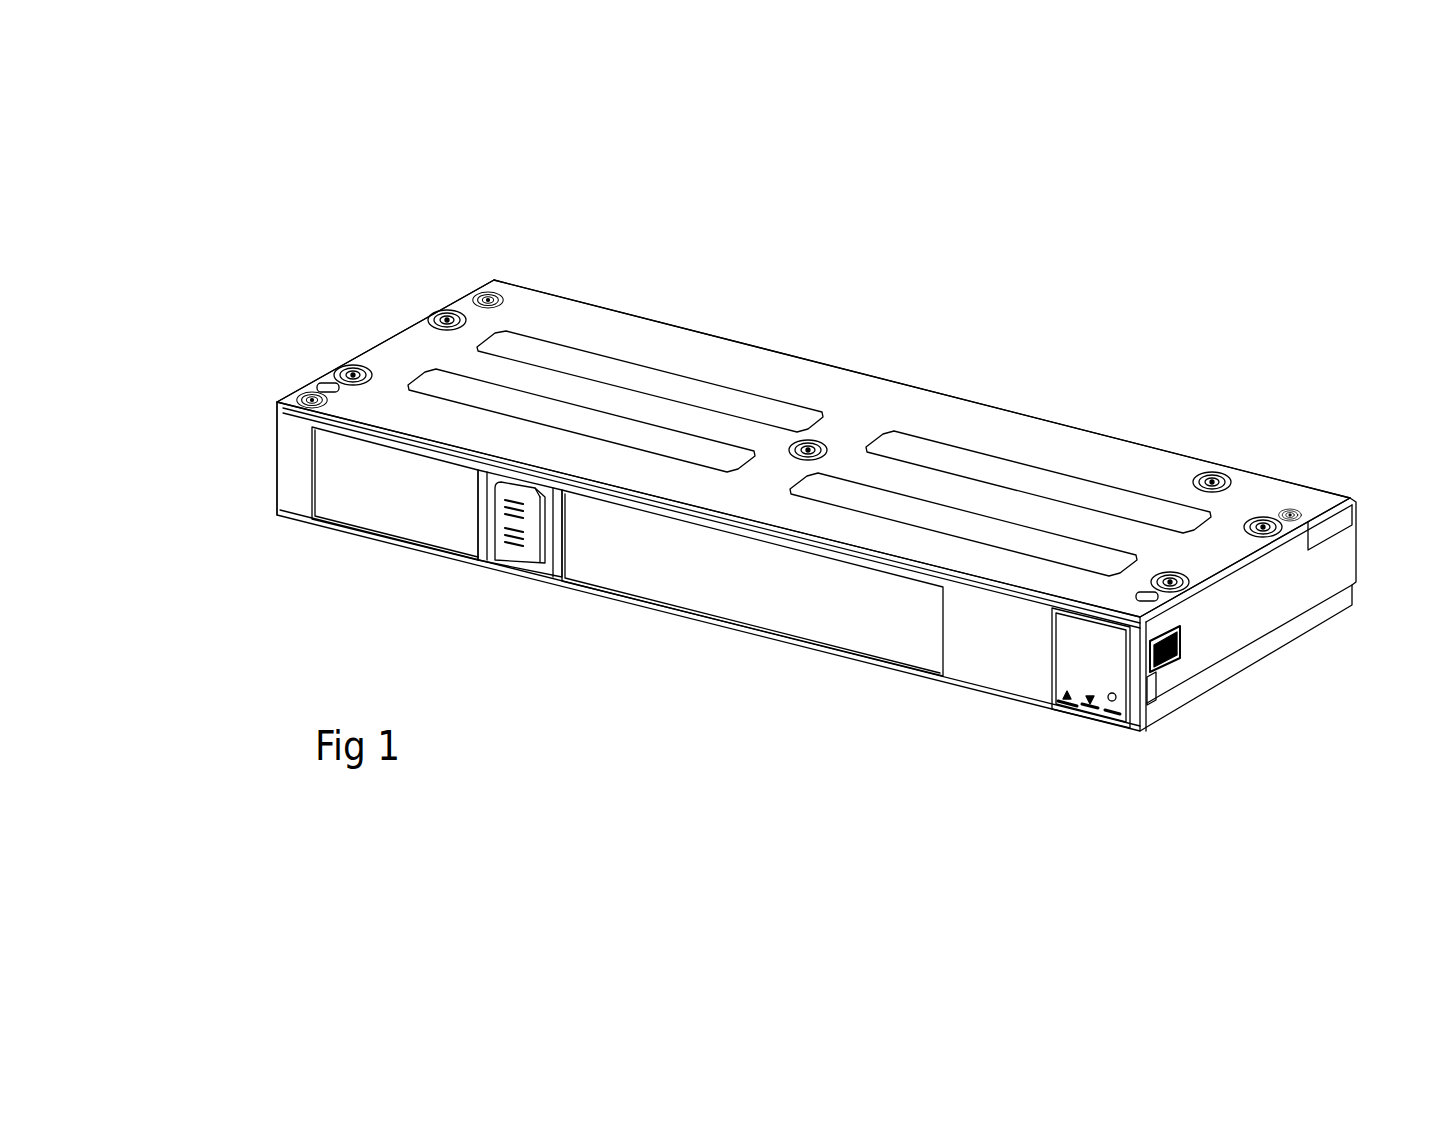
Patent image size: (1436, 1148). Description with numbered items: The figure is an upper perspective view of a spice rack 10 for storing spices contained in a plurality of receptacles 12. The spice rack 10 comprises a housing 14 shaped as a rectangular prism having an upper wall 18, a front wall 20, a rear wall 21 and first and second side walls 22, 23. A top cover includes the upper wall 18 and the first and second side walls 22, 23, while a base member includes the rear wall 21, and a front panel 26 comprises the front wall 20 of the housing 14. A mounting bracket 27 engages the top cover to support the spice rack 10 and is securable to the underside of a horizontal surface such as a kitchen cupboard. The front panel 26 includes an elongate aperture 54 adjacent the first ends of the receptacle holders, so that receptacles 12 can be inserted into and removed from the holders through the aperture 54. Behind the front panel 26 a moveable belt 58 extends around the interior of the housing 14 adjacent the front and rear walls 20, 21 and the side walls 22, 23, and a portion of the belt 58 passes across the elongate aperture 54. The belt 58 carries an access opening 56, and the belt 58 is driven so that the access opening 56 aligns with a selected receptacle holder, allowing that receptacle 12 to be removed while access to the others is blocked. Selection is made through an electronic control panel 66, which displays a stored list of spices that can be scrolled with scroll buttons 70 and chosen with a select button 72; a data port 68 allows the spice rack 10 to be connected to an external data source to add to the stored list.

The spice rack 10 is at (843, 288).
The receptacle 12 is at (500, 505).
The housing 14 is at (988, 425).
The upper wall 18 is at (608, 313).
The front wall 20 is at (975, 641).
The rear wall 21 is at (1190, 446).
The first side wall 22 is at (265, 463).
The second side wall 23 is at (1233, 665).
The front panel 26 is at (290, 495).
The mounting bracket 27 is at (1273, 605).
The elongate aperture 54 is at (778, 596).
The access opening 56 is at (552, 565).
The belt 58 is at (668, 573).
The control panel 66 is at (1095, 659).
The data port 68 is at (1168, 667).
The scroll buttons 70 is at (1055, 712).
The select button 72 is at (1113, 717).